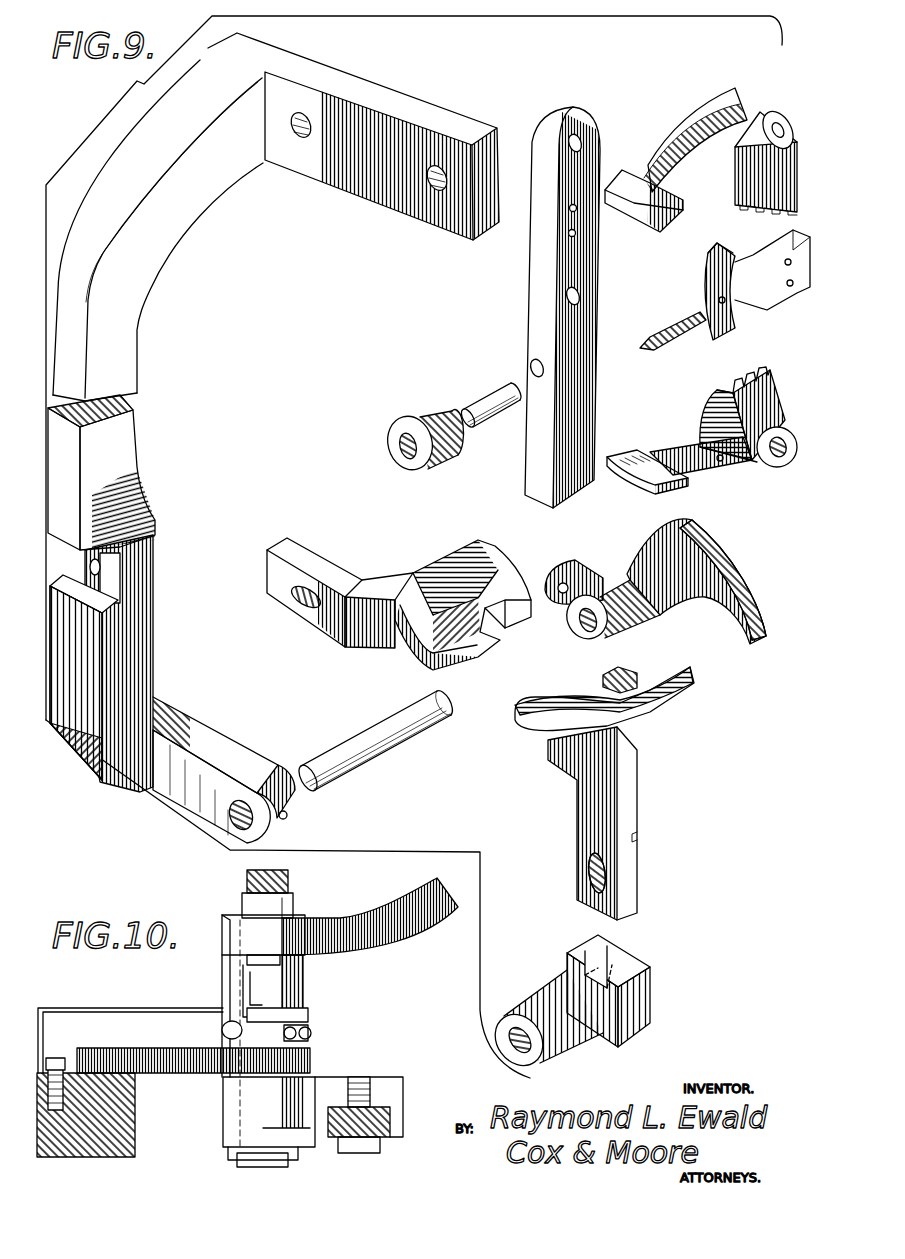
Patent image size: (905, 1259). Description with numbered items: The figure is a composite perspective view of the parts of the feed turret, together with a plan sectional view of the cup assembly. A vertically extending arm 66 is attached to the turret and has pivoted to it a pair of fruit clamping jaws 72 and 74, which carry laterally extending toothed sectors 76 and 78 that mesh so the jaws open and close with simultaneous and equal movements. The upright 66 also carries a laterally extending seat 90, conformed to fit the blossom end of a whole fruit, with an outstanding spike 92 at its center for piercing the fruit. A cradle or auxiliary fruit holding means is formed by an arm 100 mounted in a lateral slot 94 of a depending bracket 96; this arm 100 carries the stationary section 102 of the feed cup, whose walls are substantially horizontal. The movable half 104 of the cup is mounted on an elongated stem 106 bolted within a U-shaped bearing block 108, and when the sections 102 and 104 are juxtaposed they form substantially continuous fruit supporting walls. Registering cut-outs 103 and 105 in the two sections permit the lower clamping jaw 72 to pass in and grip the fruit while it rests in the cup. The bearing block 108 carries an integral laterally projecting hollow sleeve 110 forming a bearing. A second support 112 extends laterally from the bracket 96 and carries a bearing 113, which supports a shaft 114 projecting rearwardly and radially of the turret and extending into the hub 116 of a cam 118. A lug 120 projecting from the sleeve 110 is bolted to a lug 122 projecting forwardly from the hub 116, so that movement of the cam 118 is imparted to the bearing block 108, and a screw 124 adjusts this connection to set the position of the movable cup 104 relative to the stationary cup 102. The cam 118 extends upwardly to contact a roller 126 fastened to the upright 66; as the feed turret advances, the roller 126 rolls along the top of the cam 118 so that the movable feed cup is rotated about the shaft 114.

In FIG. 9, the arm 66 is at (590, 263).
In FIG. 10, the arm 66 is at (290, 878).
In FIG. 9, the fruit clamping jaw 72 is at (707, 462).
In FIG. 9, the fruit clamping jaw 74 is at (682, 138).
In FIG. 9, the toothed sector 76 is at (773, 393).
In FIG. 9, the toothed sector 78 is at (760, 193).
In FIG. 9, the seat 90 is at (710, 280).
In FIG. 9, the spike 92 is at (665, 333).
In FIG. 9, the lateral slot 94 is at (117, 582).
In FIG. 9, the bracket 96 is at (365, 192).
In FIG. 10, the bracket 96 is at (118, 1147).
In FIG. 9, the arm 100 is at (323, 623).
In FIG. 9, the stationary section of the feed cup 102 is at (497, 560).
In FIG. 9, the cut-out 103 is at (480, 627).
In FIG. 9, the movable half of the cup 104 is at (523, 722).
In FIG. 9, the cut-out 105 is at (603, 688).
In FIG. 9, the elongated stem 106 is at (607, 812).
In FIG. 10, the elongated stem 106 is at (357, 1153).
In FIG. 9, the U-shaped bearing block 108 is at (643, 985).
In FIG. 10, the U-shaped bearing block 108 is at (358, 1077).
In FIG. 9, the hollow sleeve 110 is at (537, 1057).
In FIG. 10, the hollow sleeve 110 is at (223, 1113).
In FIG. 9, the second support 112 is at (232, 742).
In FIG. 10, the second support 112 is at (102, 1017).
In FIG. 9, the bearing 113 is at (275, 824).
In FIG. 10, the bearing 113 is at (307, 1017).
In FIG. 9, the shaft 114 is at (377, 758).
In FIG. 10, the shaft 114 is at (273, 1165).
In FIG. 9, the hub 116 is at (620, 633).
In FIG. 10, the hub 116 is at (300, 967).
In FIG. 9, the cam 118 is at (713, 602).
In FIG. 10, the cam 118 is at (367, 913).
In FIG. 9, the lug 120 is at (617, 945).
In FIG. 10, the lug 120 is at (260, 1005).
In FIG. 9, the lug 122 is at (565, 560).
In FIG. 10, the lug 122 is at (223, 973).
In FIG. 10, the screw 124 is at (220, 1030).
In FIG. 9, the roller 126 is at (393, 440).